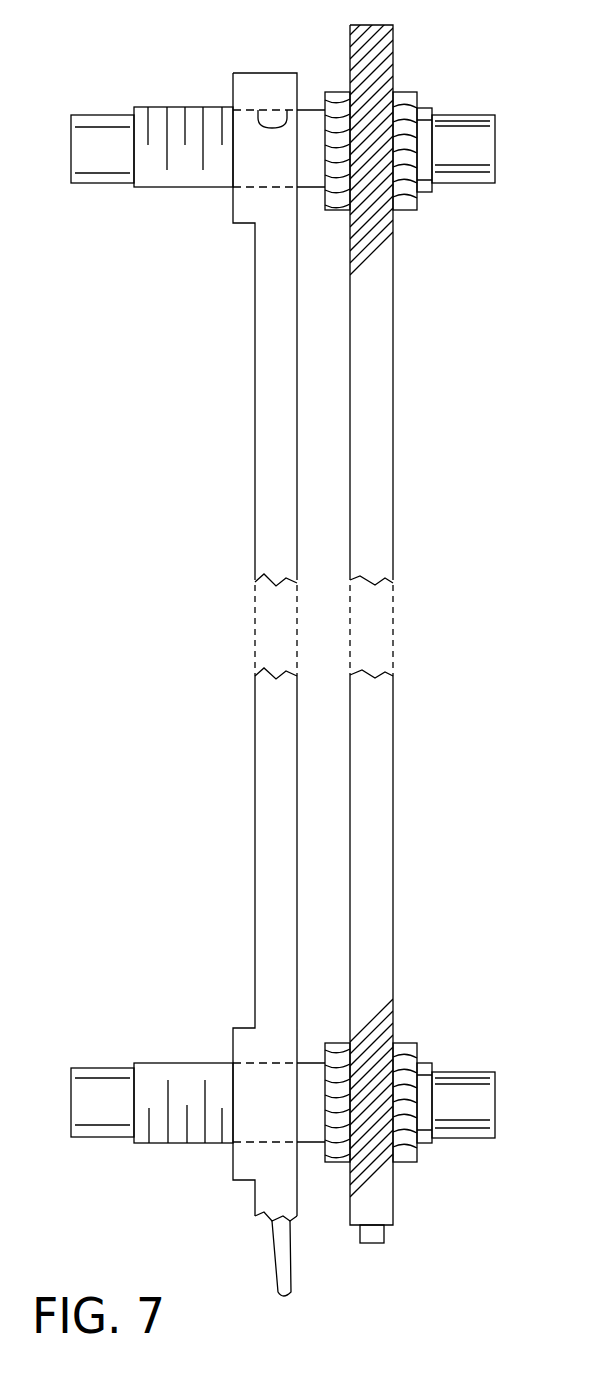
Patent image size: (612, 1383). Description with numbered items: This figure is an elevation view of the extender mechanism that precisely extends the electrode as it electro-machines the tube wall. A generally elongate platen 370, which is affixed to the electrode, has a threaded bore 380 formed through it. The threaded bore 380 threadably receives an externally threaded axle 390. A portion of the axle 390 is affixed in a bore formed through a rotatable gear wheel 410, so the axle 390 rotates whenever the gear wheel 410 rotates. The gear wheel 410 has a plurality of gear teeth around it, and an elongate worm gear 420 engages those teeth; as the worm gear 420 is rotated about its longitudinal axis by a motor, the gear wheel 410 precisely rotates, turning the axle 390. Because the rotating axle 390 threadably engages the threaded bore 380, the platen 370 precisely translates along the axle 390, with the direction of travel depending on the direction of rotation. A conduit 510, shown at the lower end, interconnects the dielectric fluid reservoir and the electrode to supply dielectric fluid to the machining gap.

The platen 370 is at (280, 73).
The threaded bore 380 is at (289, 110).
The externally threaded axle 390 is at (158, 118).
The gear wheel 410 is at (402, 108).
The worm gear 420 is at (383, 392).
The conduit 510 is at (270, 1262).